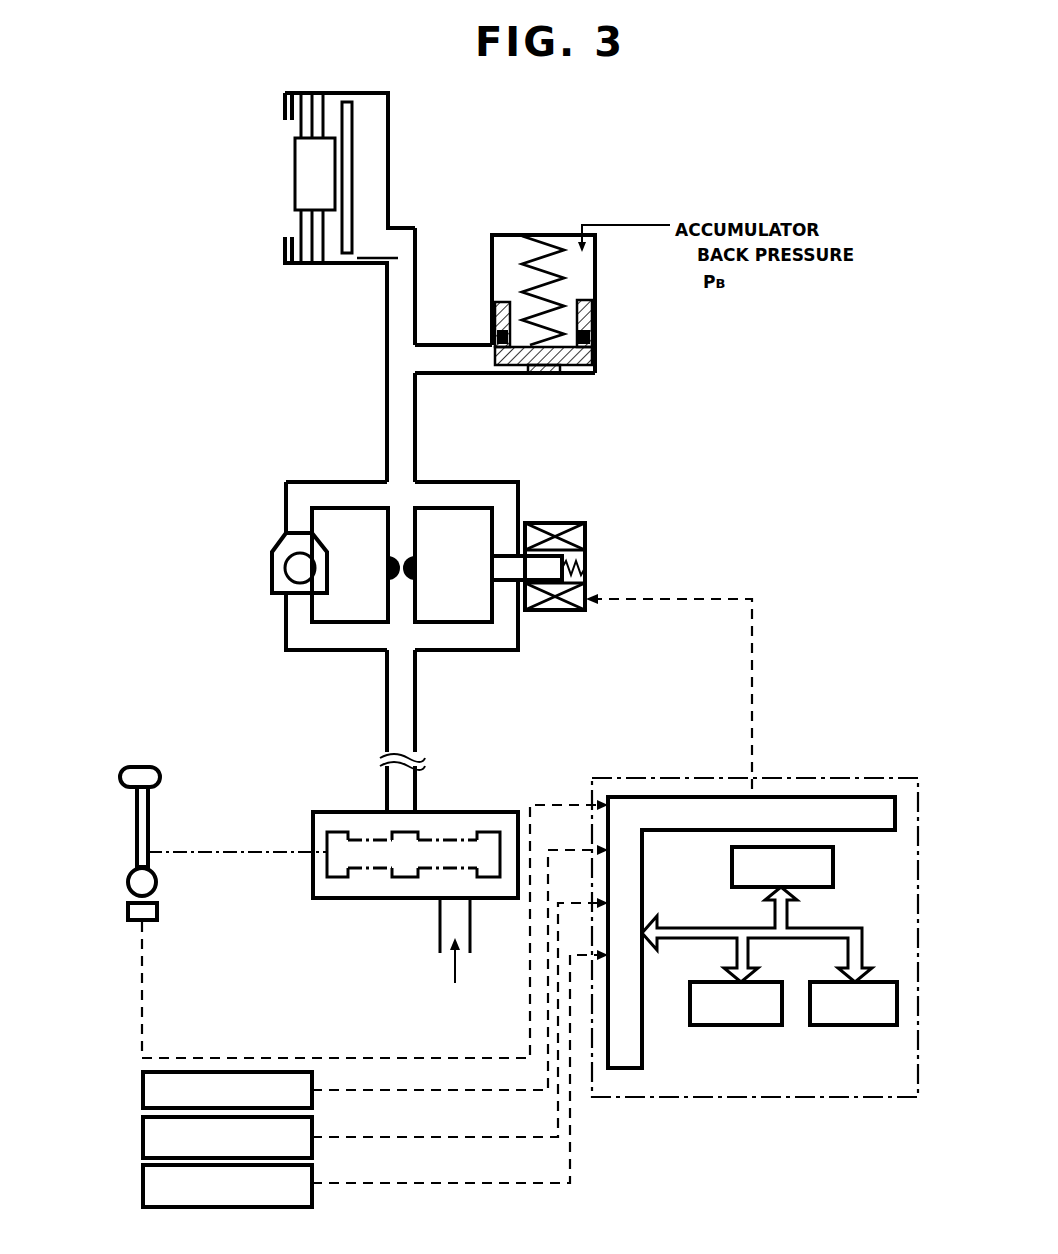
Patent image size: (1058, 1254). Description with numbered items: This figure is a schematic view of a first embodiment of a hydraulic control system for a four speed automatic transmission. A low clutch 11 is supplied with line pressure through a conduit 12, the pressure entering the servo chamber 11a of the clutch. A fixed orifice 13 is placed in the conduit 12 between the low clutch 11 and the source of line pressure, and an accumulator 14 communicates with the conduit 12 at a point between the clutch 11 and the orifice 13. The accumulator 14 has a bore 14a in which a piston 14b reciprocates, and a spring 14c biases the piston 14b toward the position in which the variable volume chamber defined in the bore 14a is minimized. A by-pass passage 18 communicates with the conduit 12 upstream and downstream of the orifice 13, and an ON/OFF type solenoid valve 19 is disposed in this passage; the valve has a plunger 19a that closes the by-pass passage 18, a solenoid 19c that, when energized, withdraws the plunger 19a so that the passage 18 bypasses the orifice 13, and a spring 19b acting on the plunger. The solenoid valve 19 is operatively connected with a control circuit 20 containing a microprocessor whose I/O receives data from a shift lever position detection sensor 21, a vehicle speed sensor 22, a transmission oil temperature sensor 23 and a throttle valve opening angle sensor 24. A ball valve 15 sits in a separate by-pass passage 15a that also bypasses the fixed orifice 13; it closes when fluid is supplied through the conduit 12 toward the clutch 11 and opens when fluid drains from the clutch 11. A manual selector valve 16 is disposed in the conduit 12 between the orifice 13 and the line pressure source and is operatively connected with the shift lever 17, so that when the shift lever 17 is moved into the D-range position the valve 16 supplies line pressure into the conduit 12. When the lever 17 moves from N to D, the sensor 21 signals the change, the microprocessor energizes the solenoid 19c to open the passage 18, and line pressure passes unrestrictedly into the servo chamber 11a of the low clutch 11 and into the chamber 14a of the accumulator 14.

The low clutch 11 is at (388, 93).
The servo chamber 11a is at (390, 188).
The conduit 12 is at (387, 400).
The fixed orifice 13 is at (410, 556).
The accumulator 14 is at (553, 235).
The bore 14a is at (598, 277).
The piston 14b is at (590, 355).
The spring 14c is at (524, 262).
The ball valve 15 is at (283, 533).
The by-pass passage 15a is at (318, 482).
The manual selector valve 16 is at (458, 812).
The shift lever 17 is at (160, 777).
The by-pass passage 18 is at (476, 482).
The solenoid valve 19 is at (592, 518).
The plunger 19a is at (535, 560).
The spring 19b is at (585, 568).
The solenoid 19c is at (552, 610).
The control circuit 20 is at (672, 778).
The shift lever position detection sensor 21 is at (157, 912).
The vehicle speed sensor 22 is at (143, 1090).
The transmission oil temperature sensor 23 is at (143, 1137).
The throttle valve opening angle sensor 24 is at (143, 1185).